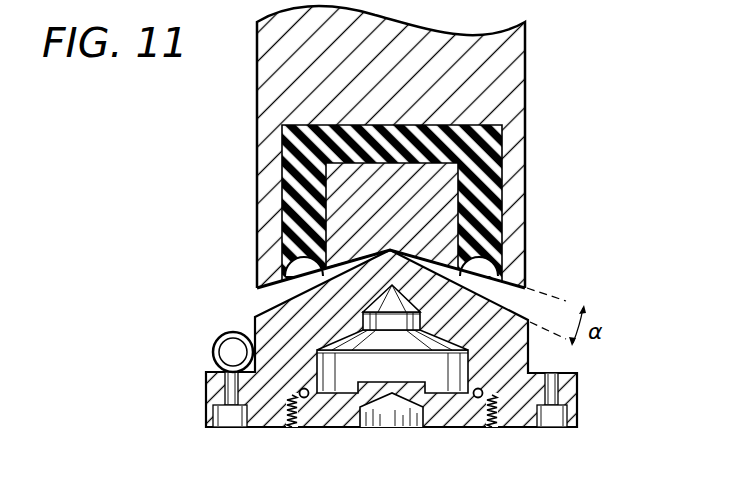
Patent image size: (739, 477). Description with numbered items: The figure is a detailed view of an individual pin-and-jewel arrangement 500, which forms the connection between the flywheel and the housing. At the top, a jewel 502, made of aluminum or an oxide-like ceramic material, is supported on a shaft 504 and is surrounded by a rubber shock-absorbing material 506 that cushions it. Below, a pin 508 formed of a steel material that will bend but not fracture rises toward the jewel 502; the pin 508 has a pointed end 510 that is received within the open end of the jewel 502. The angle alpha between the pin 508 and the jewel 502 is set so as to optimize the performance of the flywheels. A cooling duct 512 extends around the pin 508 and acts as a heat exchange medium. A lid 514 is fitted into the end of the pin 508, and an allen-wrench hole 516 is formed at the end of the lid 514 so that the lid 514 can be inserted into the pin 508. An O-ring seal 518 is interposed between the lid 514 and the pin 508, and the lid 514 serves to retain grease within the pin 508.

The pin-and-jewel arrangement 500 is at (406, 147).
The jewel 502 is at (443, 207).
The shaft 504 is at (265, 127).
The rubber shock-absorbing material 506 is at (292, 182).
The pin 508 is at (366, 363).
The pointed end 510 is at (383, 250).
The cooling duct 512 is at (216, 338).
The lid 514 is at (453, 420).
The allen-wrench hole 516 is at (390, 420).
The O-ring seal 518 is at (302, 389).